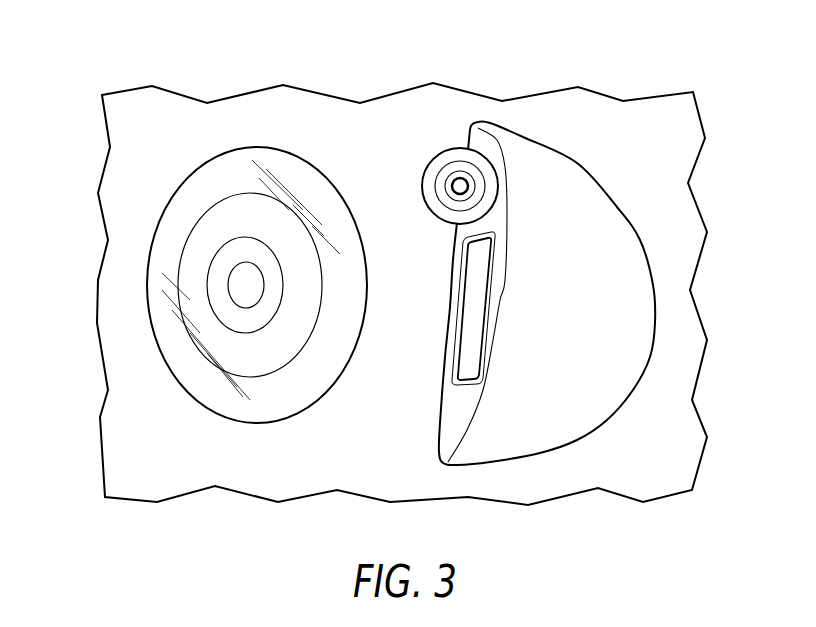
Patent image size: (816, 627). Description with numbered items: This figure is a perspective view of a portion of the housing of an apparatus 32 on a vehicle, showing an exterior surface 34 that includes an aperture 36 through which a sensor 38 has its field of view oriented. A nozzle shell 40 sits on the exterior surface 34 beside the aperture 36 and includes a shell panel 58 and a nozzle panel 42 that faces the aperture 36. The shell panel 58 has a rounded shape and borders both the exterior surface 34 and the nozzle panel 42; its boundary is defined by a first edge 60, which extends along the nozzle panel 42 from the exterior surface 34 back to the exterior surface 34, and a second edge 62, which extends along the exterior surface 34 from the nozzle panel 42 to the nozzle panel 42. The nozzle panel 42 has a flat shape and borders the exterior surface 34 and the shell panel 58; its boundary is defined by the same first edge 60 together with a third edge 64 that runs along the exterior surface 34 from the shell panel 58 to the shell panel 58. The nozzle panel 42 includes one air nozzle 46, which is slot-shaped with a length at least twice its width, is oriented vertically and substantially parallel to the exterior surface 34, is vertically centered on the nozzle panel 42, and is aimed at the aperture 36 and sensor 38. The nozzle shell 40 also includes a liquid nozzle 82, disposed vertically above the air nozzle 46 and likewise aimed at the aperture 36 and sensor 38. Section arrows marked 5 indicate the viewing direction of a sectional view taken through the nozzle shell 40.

The apparatus 32 is at (392, 287).
The exterior surface 34 is at (152, 470).
The aperture 36 is at (257, 423).
The sensor 38 is at (197, 223).
The nozzle shell 40 is at (509, 298).
The nozzle panel 42 is at (452, 442).
The air nozzle 46 is at (492, 288).
The shell panel 58 is at (578, 408).
The first edge 60 is at (488, 408).
The second edge 62 is at (518, 458).
The third edge 64 is at (453, 260).
The liquid nozzle 82 is at (453, 187).
The section line 5 is at (415, 293).